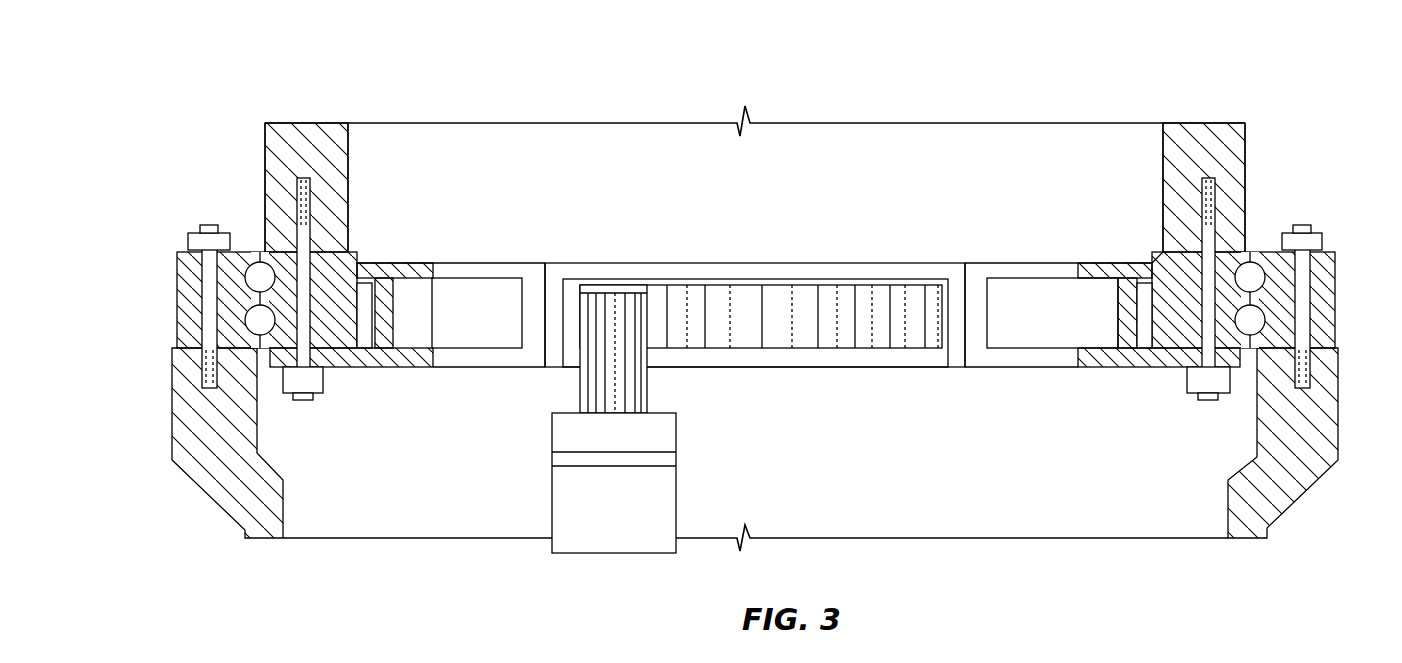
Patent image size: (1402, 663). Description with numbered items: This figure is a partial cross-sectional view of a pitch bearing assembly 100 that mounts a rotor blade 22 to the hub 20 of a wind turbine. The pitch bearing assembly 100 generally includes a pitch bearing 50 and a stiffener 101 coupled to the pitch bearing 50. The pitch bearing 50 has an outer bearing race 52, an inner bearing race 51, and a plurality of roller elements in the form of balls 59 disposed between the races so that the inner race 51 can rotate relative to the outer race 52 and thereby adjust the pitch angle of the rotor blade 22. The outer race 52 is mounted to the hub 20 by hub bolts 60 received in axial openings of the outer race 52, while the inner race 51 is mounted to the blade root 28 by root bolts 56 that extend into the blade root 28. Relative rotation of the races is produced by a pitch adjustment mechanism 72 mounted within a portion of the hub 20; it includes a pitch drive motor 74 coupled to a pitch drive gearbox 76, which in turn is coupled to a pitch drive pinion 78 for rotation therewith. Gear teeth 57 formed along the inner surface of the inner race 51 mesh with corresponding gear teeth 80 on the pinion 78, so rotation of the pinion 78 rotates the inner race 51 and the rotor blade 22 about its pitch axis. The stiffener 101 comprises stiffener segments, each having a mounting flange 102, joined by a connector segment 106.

The pitch bearing assembly 100 is at (1273, 84).
The rotor blade 22 is at (258, 147).
The blade root 28 is at (264, 183).
The hub 20 is at (170, 412).
The pitch bearing 50 is at (170, 312).
The inner bearing race 51 is at (262, 262).
The outer bearing race 52 is at (176, 266).
The root bolt 56 is at (300, 228).
The gear teeth 57 is at (848, 330).
The balls 59 is at (1250, 275).
The hub bolt 60 is at (208, 300).
The pitch adjustment mechanism 72 is at (690, 456).
The pitch drive motor 74 is at (672, 520).
The pitch drive gearbox 76 is at (673, 432).
The pitch drive pinion 78 is at (655, 403).
The gear teeth 80 is at (590, 402).
The stiffener 101 is at (400, 255).
The mounting flange 102 is at (320, 368).
The connector segment 106 is at (668, 262).